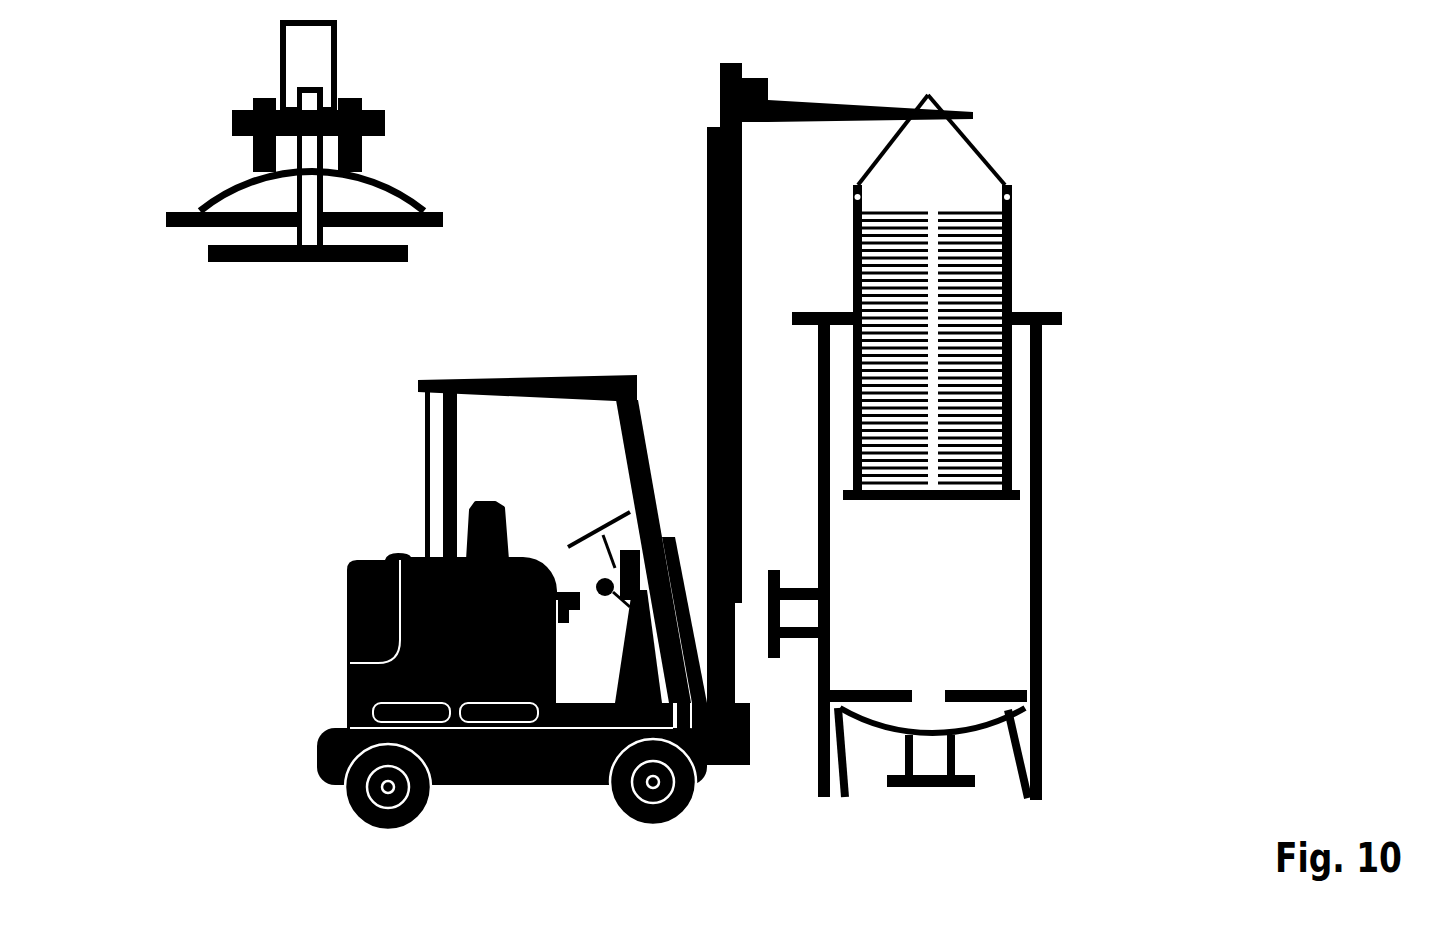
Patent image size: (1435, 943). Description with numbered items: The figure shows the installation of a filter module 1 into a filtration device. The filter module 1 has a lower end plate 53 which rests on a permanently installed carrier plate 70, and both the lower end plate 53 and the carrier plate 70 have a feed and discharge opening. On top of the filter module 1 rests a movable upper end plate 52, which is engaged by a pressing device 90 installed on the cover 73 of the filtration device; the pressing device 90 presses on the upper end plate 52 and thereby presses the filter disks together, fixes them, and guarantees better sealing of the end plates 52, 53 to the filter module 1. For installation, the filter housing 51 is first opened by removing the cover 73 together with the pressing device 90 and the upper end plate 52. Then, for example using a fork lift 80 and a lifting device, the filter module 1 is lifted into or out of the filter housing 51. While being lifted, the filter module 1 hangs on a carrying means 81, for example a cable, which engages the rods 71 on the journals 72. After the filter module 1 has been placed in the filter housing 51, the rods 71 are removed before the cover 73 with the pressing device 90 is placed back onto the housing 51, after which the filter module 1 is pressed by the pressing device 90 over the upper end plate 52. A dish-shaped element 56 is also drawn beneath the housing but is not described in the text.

The filter module 1 is at (952, 288).
The filter housing 51 is at (1040, 358).
The upper end plate 52 is at (403, 240).
The lower end plate 53 is at (980, 500).
The collecting dish 56 is at (923, 685).
The carrier plate 70 is at (1020, 702).
The rods 71 is at (860, 360).
The journals 72 is at (1008, 190).
The cover 73 is at (390, 182).
The fork lift 80 is at (350, 590).
The carrying means 81 is at (973, 150).
The pressing device 90 is at (337, 50).